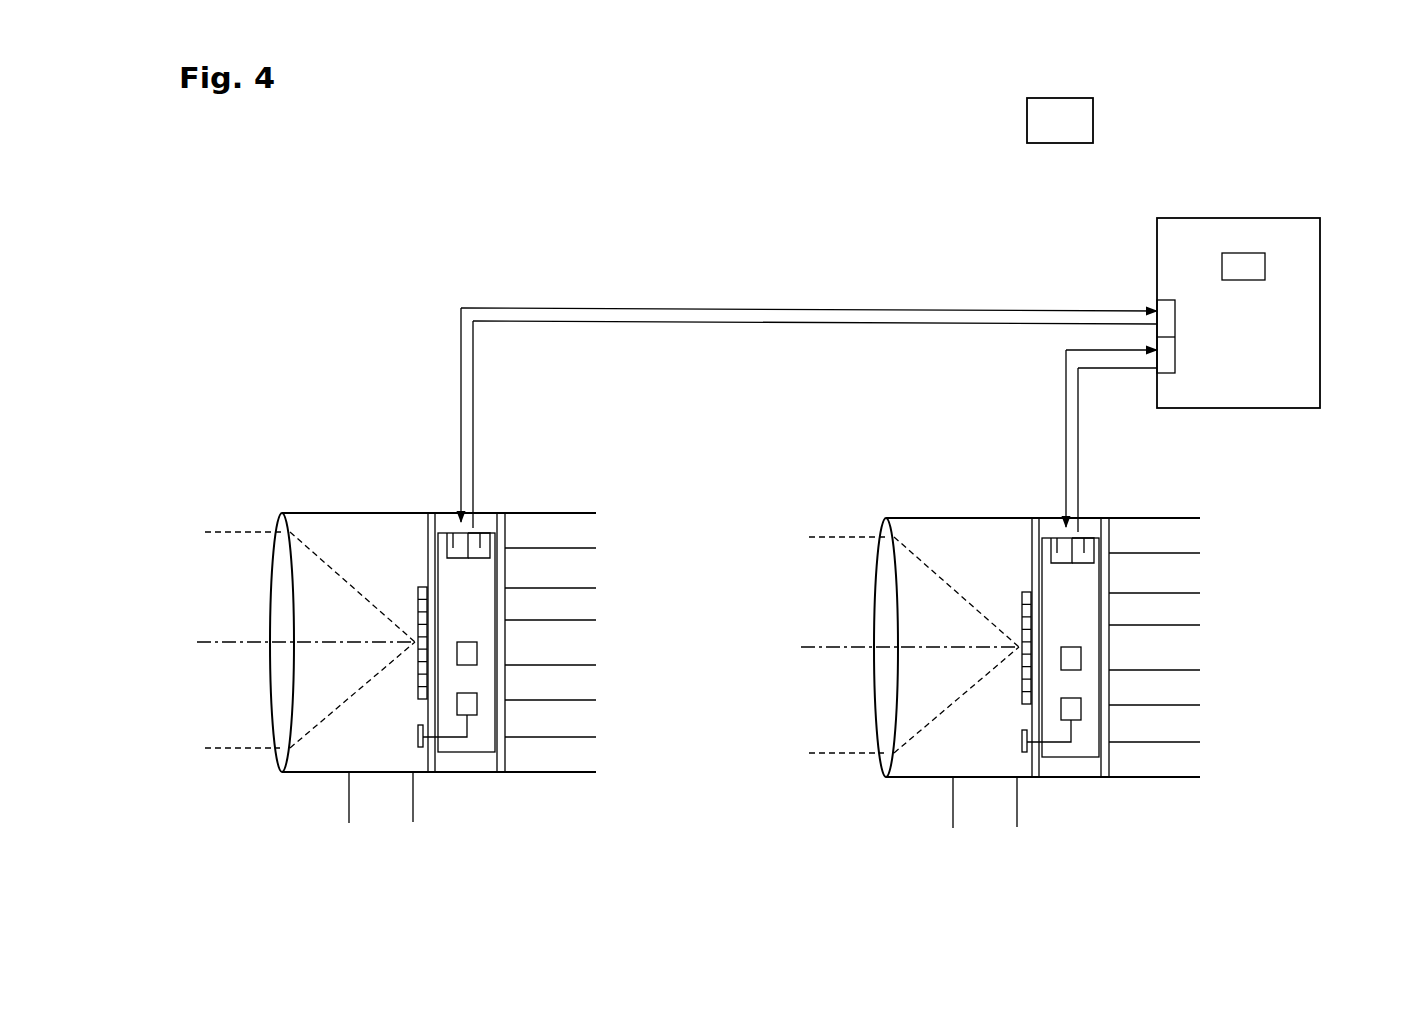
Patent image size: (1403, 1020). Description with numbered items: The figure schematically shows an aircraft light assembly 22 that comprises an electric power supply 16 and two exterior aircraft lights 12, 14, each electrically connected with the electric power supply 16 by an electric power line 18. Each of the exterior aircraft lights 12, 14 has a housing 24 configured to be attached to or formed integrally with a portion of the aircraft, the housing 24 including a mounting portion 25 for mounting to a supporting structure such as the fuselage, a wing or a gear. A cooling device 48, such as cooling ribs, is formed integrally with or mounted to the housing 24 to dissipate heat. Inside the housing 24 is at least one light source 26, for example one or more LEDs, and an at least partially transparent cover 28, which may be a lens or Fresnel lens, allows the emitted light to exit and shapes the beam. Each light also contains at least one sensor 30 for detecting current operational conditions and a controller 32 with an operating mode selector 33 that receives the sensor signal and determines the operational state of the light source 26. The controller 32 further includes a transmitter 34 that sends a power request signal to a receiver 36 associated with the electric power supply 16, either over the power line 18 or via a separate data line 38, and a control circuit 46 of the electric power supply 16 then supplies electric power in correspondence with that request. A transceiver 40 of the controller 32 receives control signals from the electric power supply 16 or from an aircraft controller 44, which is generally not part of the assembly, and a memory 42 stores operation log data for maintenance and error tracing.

The exterior aircraft light 12 is at (292, 485).
The exterior aircraft light 14 is at (1020, 589).
The electric power supply 16 is at (1185, 238).
The electric power line 18 is at (735, 308).
The aircraft light assembly 22 is at (502, 204).
The housing 24 is at (316, 513).
The mounting portion 25 is at (340, 826).
The light source 26 is at (404, 596).
The at least partially transparent cover 28 is at (258, 768).
The sensor 30 is at (418, 745).
The controller 32 is at (478, 735).
The operating mode selector 33 is at (467, 703).
The transmitter 34 is at (447, 530).
The receiver 36 is at (1168, 307).
The data line 38 is at (676, 322).
The transceiver 40 is at (480, 527).
The memory 42 is at (467, 653).
The aircraft controller 44 is at (1045, 124).
The control circuit 46 is at (1246, 262).
The cooling device 48 is at (602, 569).